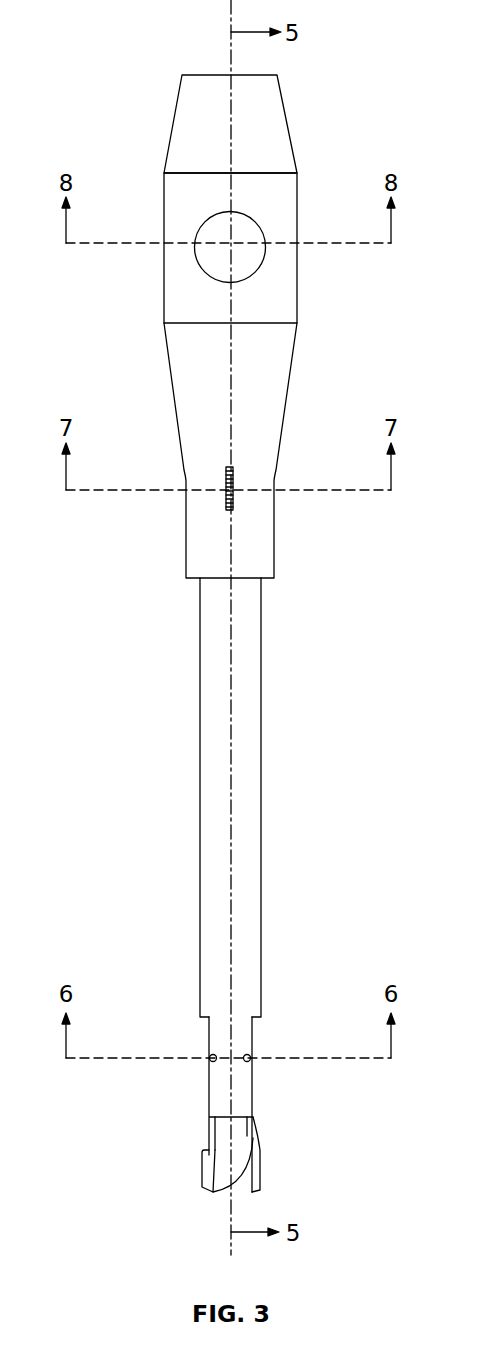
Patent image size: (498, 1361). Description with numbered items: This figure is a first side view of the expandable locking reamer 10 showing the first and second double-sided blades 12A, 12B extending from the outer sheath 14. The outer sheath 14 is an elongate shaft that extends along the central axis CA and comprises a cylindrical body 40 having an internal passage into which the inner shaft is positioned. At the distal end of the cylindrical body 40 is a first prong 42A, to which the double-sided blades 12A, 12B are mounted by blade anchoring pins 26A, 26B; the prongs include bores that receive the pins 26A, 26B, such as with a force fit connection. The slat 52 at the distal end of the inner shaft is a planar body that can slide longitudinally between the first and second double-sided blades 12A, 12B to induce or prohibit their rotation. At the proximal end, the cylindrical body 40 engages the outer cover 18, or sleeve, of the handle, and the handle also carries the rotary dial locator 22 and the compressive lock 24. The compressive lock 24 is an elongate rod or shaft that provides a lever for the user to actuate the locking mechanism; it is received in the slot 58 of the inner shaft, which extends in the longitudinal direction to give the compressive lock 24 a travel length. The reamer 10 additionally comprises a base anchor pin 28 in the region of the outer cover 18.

The central axis CA is at (228, 26).
The expandable locking reamer 10 is at (336, 47).
The rotary dial locator 22 is at (182, 95).
The base anchor pin 28 is at (171, 125).
The outer cover 18 is at (284, 288).
The slot 58 is at (236, 484).
The compressive lock 24 is at (236, 498).
The cylindrical body 40 is at (250, 760).
The outer sheath 14 is at (250, 898).
The blade anchoring pin 26A is at (212, 1066).
The blade anchoring pin 26B is at (250, 1066).
The slat 52 is at (207, 1130).
The first prong 42A is at (243, 1105).
The first double-sided blade 12A is at (210, 1186).
The second double-sided blade 12B is at (258, 1168).